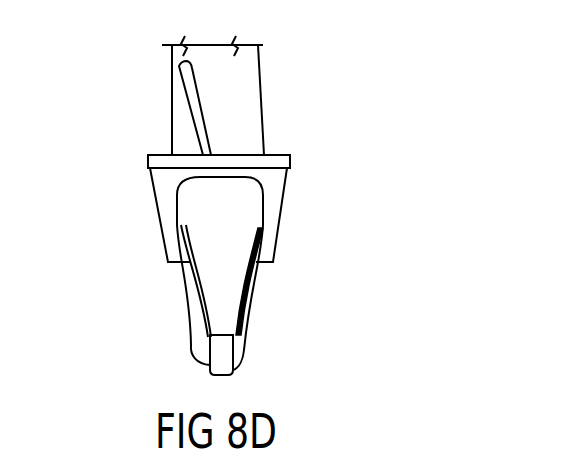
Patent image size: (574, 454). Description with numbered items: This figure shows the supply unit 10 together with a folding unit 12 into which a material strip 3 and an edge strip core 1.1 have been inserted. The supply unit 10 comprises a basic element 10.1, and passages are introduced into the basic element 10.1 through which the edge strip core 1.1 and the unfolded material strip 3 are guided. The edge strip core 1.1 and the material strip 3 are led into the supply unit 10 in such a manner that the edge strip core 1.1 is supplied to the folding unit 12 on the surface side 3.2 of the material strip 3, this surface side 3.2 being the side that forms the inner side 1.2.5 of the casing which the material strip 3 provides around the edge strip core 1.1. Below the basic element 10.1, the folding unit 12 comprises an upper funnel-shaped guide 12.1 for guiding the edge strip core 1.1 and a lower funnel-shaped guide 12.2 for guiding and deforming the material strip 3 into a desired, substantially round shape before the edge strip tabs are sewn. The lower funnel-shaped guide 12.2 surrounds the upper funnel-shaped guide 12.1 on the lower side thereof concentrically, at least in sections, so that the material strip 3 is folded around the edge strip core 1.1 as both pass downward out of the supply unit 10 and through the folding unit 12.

The edge strip core 1.1 is at (192, 88).
The inner side of the casing 1.2.5 is at (184, 130).
The supply unit 10 is at (282, 158).
The basic element 10.1 is at (273, 213).
The folding unit 12 is at (170, 205).
The upper funnel-shaped guide 12.1 is at (222, 255).
The lower funnel-shaped guide 12.2 is at (250, 278).
The material strip 3 is at (203, 350).
The surface side of the material strip 3.2 is at (238, 352).